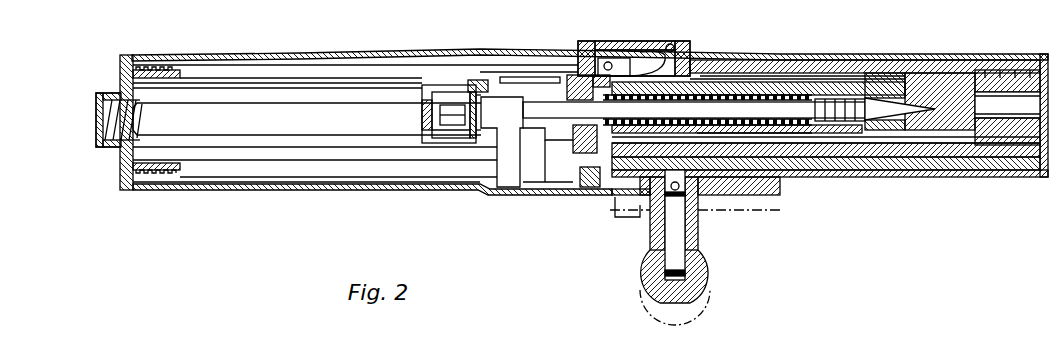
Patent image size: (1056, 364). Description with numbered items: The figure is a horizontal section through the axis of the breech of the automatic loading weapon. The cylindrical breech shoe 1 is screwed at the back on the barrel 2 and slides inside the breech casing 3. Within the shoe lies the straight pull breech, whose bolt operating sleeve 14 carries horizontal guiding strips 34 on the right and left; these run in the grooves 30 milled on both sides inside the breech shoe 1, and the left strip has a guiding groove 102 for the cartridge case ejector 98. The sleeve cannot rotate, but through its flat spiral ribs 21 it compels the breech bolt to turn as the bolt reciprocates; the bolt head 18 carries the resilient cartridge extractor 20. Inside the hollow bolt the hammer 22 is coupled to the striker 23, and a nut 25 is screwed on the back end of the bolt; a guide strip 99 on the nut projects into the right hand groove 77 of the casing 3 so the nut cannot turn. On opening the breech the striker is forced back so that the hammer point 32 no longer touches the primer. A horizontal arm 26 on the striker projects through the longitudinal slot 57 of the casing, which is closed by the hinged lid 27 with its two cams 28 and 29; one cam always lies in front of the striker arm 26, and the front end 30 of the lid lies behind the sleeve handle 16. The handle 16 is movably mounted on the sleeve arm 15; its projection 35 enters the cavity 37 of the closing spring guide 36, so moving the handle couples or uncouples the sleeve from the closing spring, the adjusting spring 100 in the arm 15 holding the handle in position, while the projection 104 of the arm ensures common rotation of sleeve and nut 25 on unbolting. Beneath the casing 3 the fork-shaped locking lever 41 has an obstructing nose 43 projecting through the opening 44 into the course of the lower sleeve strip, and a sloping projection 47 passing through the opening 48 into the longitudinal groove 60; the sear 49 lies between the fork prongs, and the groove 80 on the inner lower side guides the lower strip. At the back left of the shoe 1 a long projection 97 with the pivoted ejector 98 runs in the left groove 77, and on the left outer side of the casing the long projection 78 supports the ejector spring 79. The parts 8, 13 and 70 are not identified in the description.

The breech shoe 1 is at (988, 72).
The barrel 2 is at (1007, 78).
The breech casing 3 is at (252, 56).
The front end wall 8 is at (120, 65).
The cap nut 13 is at (100, 118).
The bolt operating sleeve 14 is at (837, 140).
The arm 15 is at (684, 226).
The sleeve handle 16 is at (648, 266).
The head of the breech bolt 18 is at (947, 88).
The cartridge extractor 20 is at (957, 140).
The flat spiral ribs 21 is at (797, 92).
The hammer 22 is at (840, 122).
The striker 23 is at (778, 134).
The nut 25 is at (577, 80).
The horizontal arm 26 is at (507, 160).
The hinged lid 27 is at (205, 188).
The cam 28 is at (528, 195).
The cam 29 is at (577, 193).
The grooves 30 is at (600, 193).
The hammer point 32 is at (913, 125).
The guiding strips 34 is at (733, 84).
The projection 35 is at (748, 160).
The closing spring guide 36 is at (960, 165).
The cavity 37 is at (775, 137).
The fork-shaped lever 41 is at (443, 132).
The obstructing nose 43 is at (427, 118).
The opening 44 is at (442, 84).
The sloping projection 47 is at (545, 80).
The opening 48 is at (530, 75).
The sear 49 is at (430, 120).
The longitudinal slot 57 is at (327, 170).
The longitudinal groove 60 is at (317, 85).
The collar 70 is at (176, 57).
The longitudinal grooves 77 is at (262, 64).
The long projection 78 is at (597, 57).
The ejector spring 79 is at (614, 64).
The longitudinal groove 80 is at (297, 118).
The long projection 97 is at (682, 43).
The ejector 98 is at (640, 62).
The guide strip 99 is at (580, 145).
The adjusting spring 100 is at (684, 248).
The guiding groove 102 is at (832, 78).
The projection 104 is at (643, 165).